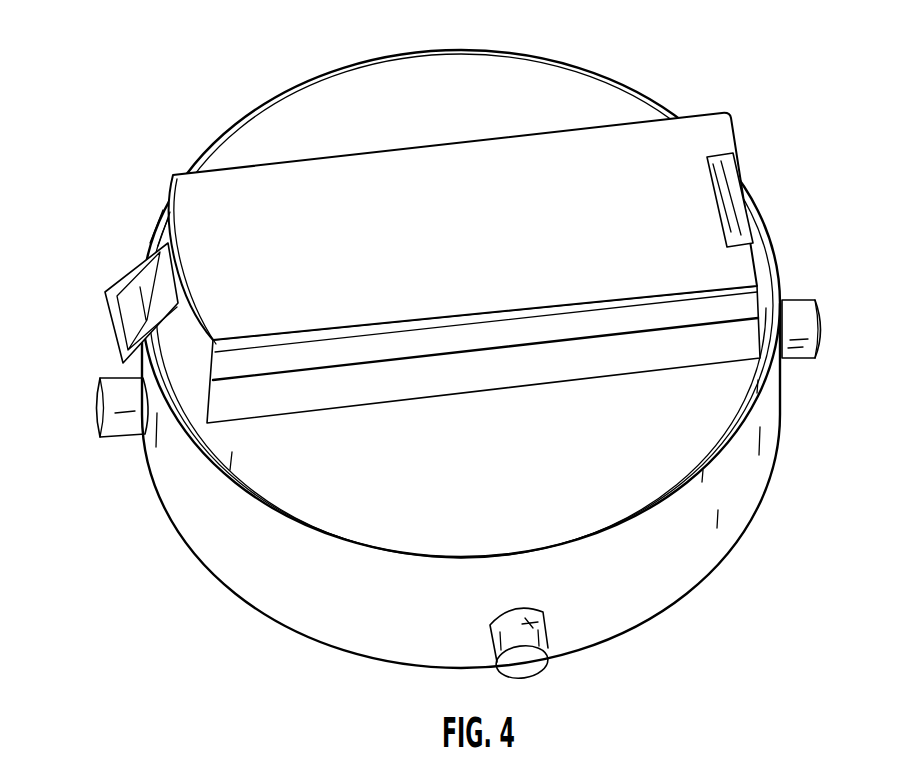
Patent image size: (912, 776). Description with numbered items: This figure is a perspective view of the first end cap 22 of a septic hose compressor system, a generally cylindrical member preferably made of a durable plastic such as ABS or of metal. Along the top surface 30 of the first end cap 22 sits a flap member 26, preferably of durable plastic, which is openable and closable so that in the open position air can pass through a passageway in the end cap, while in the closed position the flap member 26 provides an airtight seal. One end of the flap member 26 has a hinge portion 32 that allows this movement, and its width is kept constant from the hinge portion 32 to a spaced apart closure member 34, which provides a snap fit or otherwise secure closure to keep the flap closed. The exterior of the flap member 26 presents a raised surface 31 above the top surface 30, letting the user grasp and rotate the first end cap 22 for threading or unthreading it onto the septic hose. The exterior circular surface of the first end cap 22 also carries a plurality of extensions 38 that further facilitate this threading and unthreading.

The first end cap 22 is at (208, 132).
The flap member 26 is at (608, 152).
The top surface 30 is at (305, 110).
The raised surface 31 is at (281, 400).
The hinge portion 32 is at (732, 188).
The closure member 34 is at (108, 298).
The extensions 38 is at (540, 627).